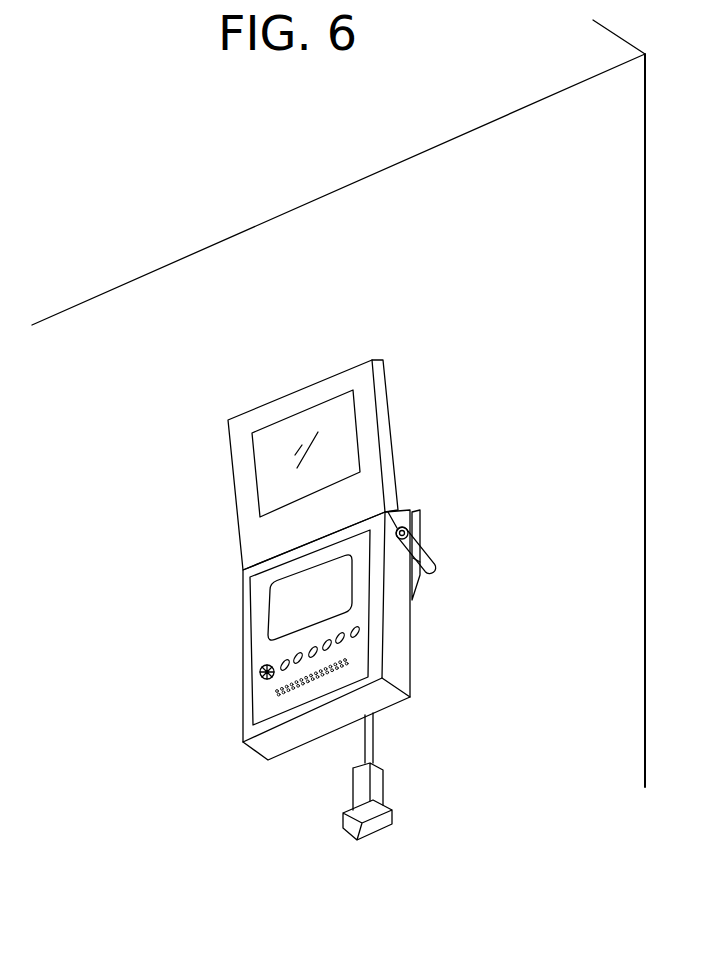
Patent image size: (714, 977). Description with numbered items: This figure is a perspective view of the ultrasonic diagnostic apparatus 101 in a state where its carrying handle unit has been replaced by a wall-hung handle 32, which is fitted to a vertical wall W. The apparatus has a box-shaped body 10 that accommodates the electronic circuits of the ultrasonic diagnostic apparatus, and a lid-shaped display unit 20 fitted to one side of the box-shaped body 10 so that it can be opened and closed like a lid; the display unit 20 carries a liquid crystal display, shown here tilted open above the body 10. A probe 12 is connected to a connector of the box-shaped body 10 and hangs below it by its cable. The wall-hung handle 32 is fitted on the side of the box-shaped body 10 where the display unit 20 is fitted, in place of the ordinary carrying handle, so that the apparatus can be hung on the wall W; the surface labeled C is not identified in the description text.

The ultrasonic diagnostic apparatus 101 is at (269, 382).
The lid-shaped display unit 20 is at (260, 540).
The box-shaped body 10 is at (266, 742).
The wall-hung handle 32 is at (432, 548).
The probe 12 is at (375, 780).
The machine (cabinet) C is at (361, 151).
The vertical wall W is at (534, 259).